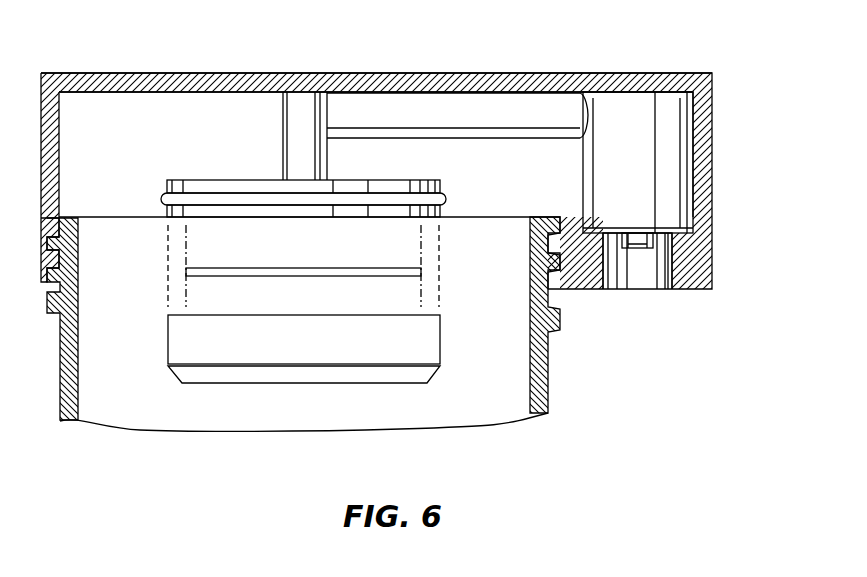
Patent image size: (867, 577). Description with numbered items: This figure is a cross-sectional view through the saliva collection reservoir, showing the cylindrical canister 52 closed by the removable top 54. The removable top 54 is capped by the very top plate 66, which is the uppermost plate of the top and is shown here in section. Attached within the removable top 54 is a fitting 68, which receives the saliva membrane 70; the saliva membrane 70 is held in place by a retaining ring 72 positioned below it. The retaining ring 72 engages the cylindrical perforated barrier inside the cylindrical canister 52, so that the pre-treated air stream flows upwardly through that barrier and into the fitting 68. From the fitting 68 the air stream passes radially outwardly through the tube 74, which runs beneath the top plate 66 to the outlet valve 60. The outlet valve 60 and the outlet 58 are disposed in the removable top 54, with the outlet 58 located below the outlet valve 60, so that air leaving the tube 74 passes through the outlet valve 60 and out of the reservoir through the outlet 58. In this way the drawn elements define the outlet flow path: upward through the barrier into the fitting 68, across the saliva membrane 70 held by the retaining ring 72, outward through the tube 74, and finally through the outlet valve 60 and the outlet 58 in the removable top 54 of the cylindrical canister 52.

The cylindrical canister 52 is at (545, 363).
The removable top 54 is at (712, 219).
The outlet 58 is at (647, 275).
The outlet valve 60 is at (665, 143).
The top plate 66 is at (134, 73).
The fitting 68 is at (240, 178).
The saliva membrane 70 is at (296, 268).
The retaining ring 72 is at (300, 373).
The tube 74 is at (448, 93).